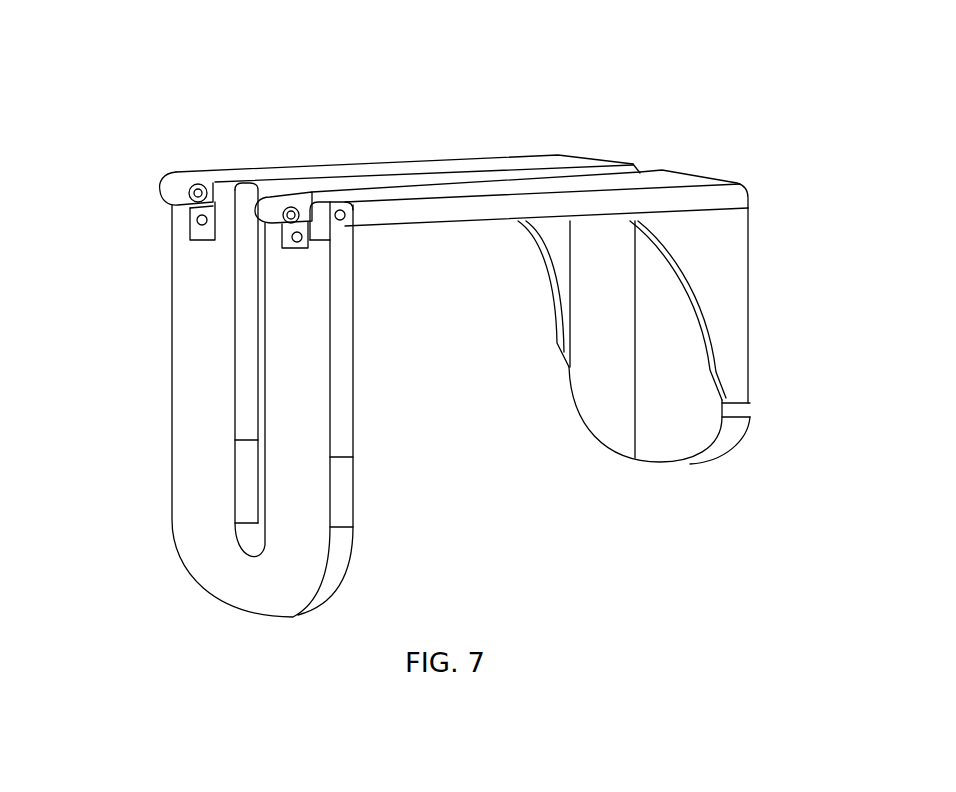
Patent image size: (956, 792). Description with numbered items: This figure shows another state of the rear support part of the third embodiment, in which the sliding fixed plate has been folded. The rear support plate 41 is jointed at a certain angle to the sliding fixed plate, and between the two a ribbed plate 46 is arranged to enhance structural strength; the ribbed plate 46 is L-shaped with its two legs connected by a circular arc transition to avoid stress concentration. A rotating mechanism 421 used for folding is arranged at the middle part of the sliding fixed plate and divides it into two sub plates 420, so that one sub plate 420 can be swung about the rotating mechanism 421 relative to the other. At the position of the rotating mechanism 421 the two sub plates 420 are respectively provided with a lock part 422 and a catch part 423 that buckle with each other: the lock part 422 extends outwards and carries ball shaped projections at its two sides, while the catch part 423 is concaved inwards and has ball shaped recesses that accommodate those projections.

The rear support plate 41 is at (668, 425).
The ribbed plate 46 is at (731, 285).
The sub plate 420 is at (571, 140).
The rotating mechanism 421 is at (352, 219).
The lock part 422 is at (207, 185).
The catch part 423 is at (275, 247).